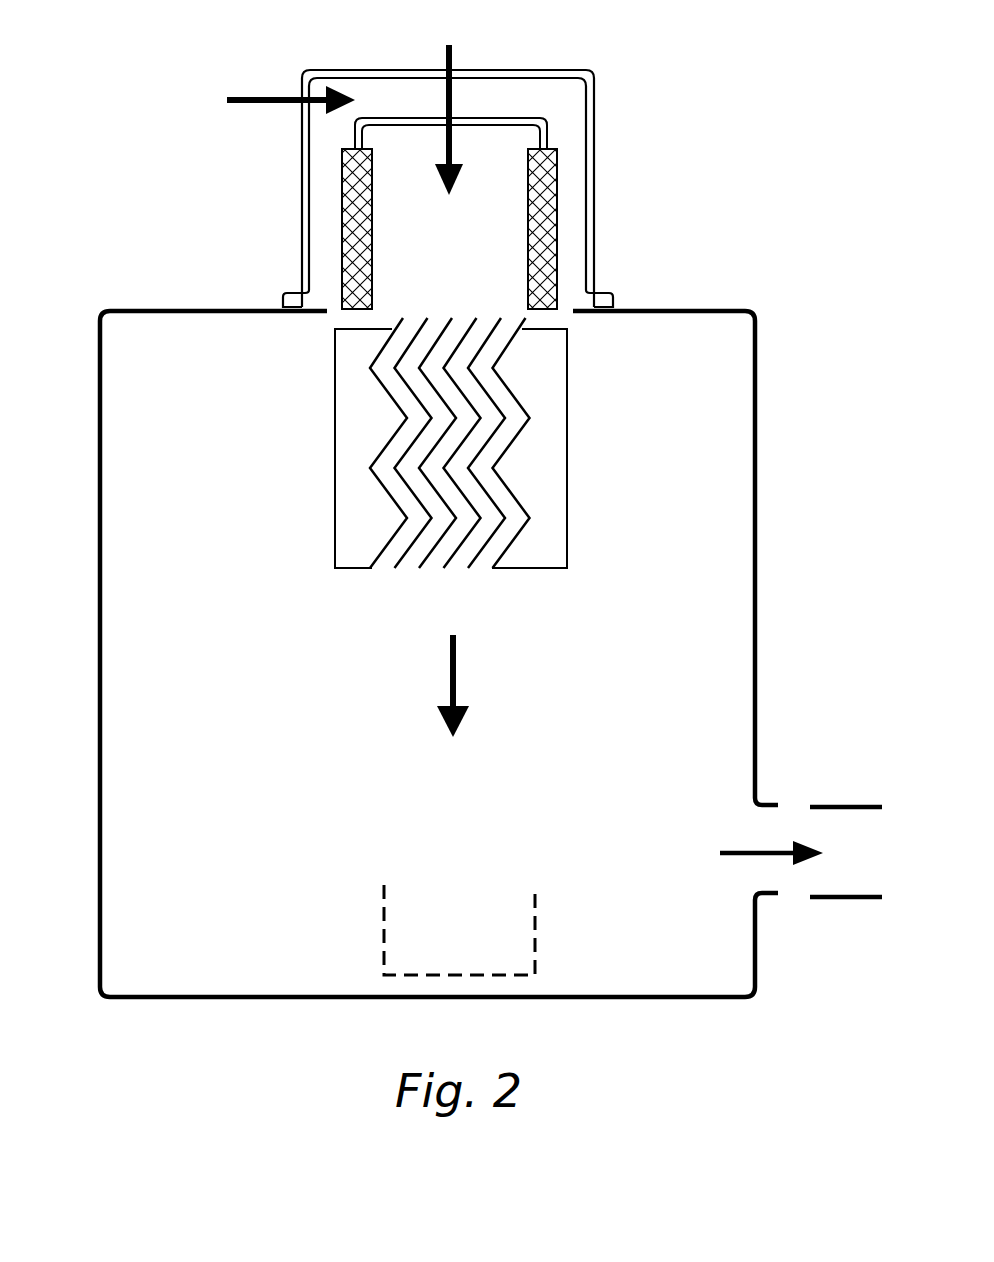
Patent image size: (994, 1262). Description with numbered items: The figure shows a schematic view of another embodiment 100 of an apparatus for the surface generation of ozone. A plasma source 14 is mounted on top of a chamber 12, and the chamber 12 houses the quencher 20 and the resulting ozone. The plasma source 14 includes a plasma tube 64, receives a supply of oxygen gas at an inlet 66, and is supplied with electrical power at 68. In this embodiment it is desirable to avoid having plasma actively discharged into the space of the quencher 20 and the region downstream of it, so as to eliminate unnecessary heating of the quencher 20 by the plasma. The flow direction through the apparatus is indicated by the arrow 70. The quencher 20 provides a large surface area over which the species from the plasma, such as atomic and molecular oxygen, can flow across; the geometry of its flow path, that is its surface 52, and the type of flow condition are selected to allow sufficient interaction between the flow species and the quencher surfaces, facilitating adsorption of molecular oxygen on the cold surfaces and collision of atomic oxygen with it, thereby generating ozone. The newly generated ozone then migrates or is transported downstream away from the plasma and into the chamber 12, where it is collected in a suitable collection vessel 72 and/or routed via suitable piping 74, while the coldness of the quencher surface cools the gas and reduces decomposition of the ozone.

The embodiment of the method and apparatus 100 is at (133, 87).
The chamber 12 is at (125, 309).
The plasma source 14 is at (595, 187).
The quencher 20 is at (333, 462).
The surface 52 is at (513, 442).
The plasma tube 64 is at (475, 271).
The inlet 66 is at (455, 52).
The electrical power supply 68 is at (248, 94).
The arrow 70 is at (450, 670).
The collection vessel 72 is at (383, 912).
The piping 74 is at (858, 806).